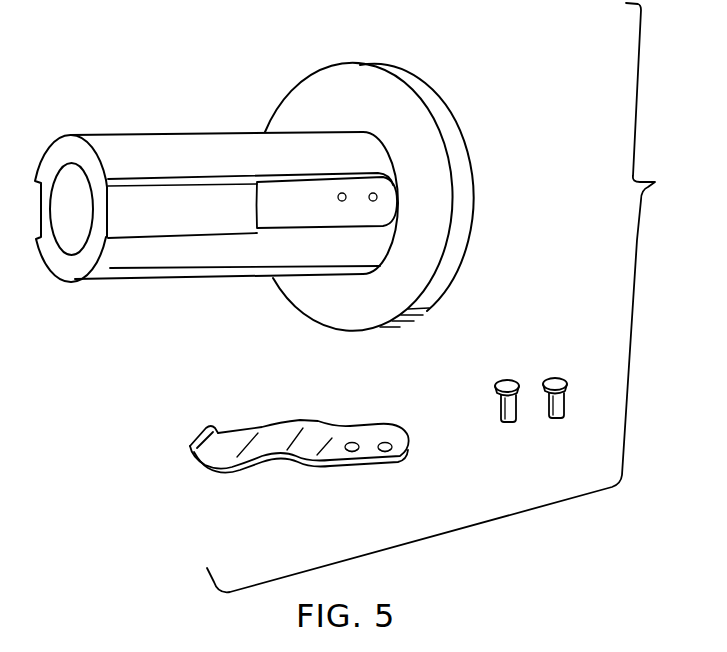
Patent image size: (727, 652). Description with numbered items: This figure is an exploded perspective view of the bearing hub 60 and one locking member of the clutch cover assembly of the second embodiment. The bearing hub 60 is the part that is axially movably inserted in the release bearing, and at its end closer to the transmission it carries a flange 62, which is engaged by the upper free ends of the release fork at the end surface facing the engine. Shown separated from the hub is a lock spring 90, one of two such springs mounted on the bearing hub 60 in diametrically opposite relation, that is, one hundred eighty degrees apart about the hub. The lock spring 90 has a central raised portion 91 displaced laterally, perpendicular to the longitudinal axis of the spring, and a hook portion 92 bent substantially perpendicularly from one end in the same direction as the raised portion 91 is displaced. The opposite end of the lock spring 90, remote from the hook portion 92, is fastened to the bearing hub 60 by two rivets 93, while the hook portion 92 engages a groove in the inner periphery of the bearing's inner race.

The bearing hub 60 is at (143, 122).
The flange 62 is at (308, 100).
The lock spring 90 is at (289, 465).
The central raised portion 91 is at (303, 458).
The hook portion 92 is at (197, 438).
The rivets 93 is at (556, 378).